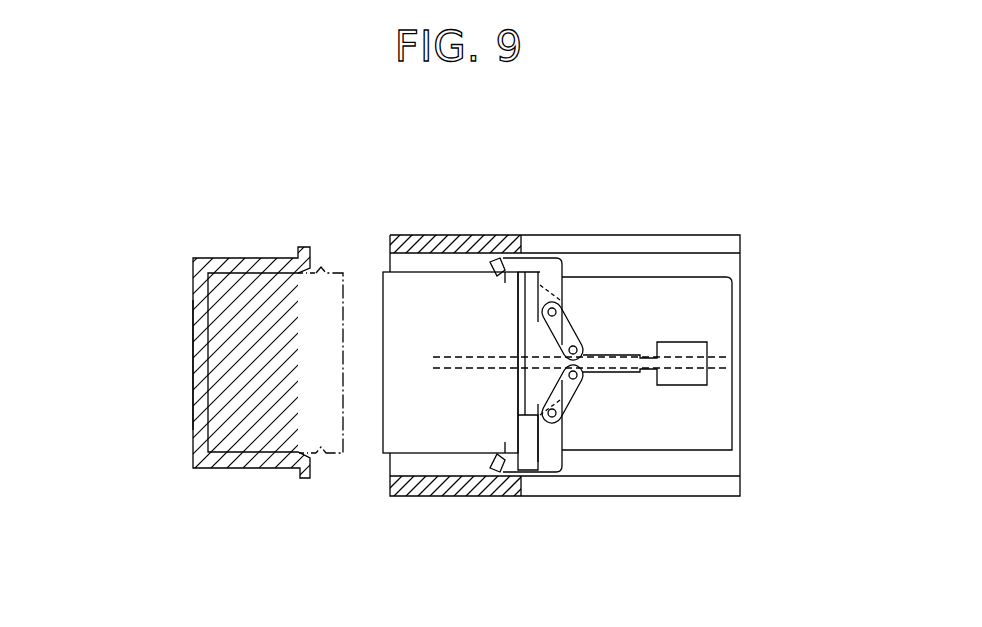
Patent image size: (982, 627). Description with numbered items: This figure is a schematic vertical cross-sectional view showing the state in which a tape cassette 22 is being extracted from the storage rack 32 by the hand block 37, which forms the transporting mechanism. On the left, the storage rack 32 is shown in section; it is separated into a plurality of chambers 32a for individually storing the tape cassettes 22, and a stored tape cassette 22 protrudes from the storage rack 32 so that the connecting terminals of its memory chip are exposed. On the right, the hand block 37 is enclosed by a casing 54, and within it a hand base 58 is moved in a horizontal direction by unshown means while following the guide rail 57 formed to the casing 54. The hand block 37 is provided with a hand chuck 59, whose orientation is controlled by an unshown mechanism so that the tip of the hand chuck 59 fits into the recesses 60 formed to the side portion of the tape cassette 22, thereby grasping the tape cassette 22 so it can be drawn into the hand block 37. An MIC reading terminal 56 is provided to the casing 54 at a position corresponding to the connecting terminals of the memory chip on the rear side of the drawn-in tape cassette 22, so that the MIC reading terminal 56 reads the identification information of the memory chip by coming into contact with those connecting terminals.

The tape cassette 22 is at (383, 290).
The storage rack 32 is at (262, 262).
The chamber 32a is at (205, 362).
The hand block 37 is at (652, 171).
The casing 54 is at (688, 235).
The MIC reading terminal 56 is at (545, 452).
The guide rail 57 is at (448, 383).
The hand base 58 is at (718, 312).
The hand chuck 59 is at (510, 283).
The recess 60 is at (500, 262).